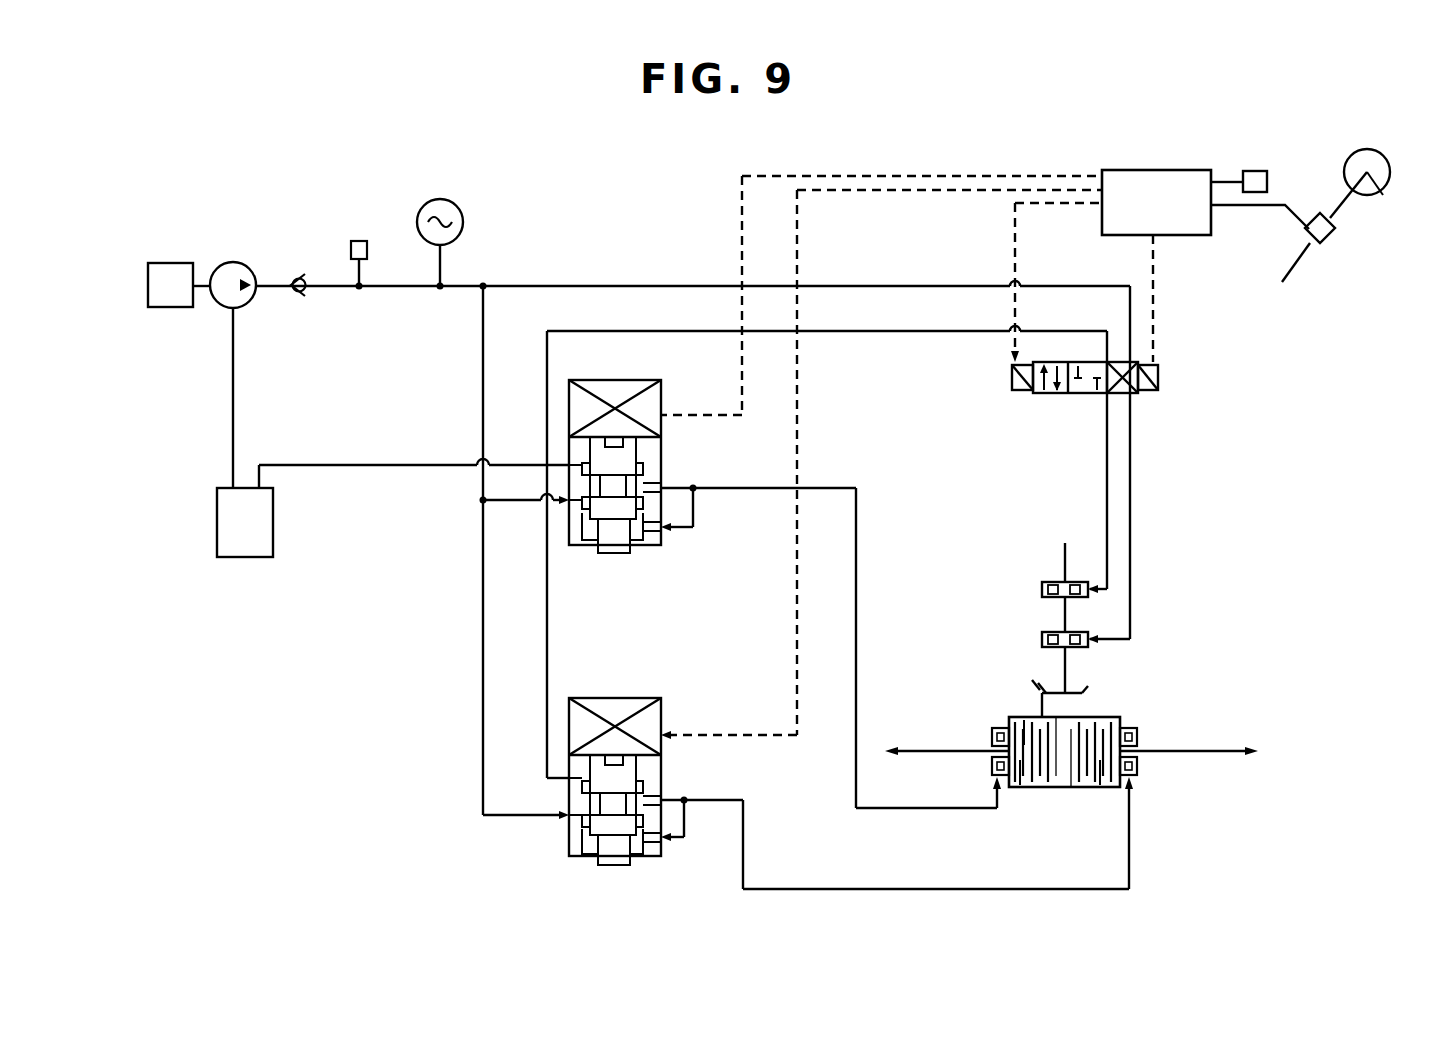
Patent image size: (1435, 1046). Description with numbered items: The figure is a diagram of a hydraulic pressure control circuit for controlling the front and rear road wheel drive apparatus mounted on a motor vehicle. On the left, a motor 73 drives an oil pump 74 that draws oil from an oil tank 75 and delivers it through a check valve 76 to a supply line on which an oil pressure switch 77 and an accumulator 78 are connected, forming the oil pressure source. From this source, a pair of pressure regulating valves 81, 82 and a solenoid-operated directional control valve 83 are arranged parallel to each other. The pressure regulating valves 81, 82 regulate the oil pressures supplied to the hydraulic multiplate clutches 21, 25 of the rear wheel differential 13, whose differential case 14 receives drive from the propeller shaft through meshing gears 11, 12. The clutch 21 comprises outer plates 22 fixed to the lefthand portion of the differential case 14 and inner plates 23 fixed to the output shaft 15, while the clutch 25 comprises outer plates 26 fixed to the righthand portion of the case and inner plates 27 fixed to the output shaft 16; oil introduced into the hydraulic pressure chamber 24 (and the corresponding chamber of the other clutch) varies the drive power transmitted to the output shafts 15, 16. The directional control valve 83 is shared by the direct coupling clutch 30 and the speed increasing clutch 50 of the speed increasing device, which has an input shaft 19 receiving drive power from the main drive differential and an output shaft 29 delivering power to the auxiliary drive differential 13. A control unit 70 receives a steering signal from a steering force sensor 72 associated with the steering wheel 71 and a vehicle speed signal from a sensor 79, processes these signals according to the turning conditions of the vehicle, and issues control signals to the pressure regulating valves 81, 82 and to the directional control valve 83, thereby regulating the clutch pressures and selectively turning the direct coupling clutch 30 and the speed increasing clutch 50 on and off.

The meshing gear 11 is at (1082, 696).
The meshing gear 12 is at (1036, 790).
The rear wheel differential 13 is at (1080, 808).
The differential case 14 is at (1062, 790).
The output shaft 15 is at (940, 751).
The output shaft 16 is at (1194, 751).
The input shaft 19 is at (1063, 560).
The hydraulic multiplate clutch 21 is at (1000, 709).
The outer plates 22 is at (1025, 719).
The inner plates 23 is at (1022, 790).
The hydraulic pressure chamber 24 is at (990, 763).
The hydraulic multiplate clutch 25 is at (1130, 738).
The outer plates 26 is at (1134, 716).
The inner plates 27 is at (1096, 790).
The output shaft 29 is at (1068, 666).
The direct coupling clutch 30 is at (1034, 580).
The speed increasing clutch 50 is at (1034, 632).
The control unit 70 is at (1150, 170).
The steering wheel 71 is at (1353, 150).
The steering force sensor 72 is at (1312, 213).
The motor 73 is at (168, 262).
The oil pump 74 is at (233, 262).
The oil tank 75 is at (217, 506).
The check valve 76 is at (292, 276).
The oil pressure switch 77 is at (359, 241).
The accumulator 78 is at (440, 199).
The vehicle speed sensor 79 is at (1250, 171).
The pressure regulating valve 81 is at (615, 562).
The pressure regulating valve 82 is at (620, 866).
The solenoid-operated directional control valve 83 is at (1036, 400).